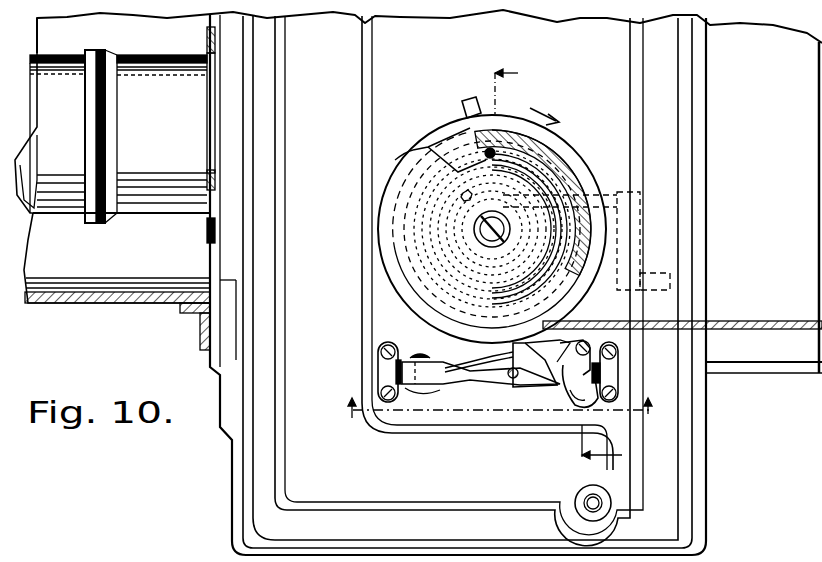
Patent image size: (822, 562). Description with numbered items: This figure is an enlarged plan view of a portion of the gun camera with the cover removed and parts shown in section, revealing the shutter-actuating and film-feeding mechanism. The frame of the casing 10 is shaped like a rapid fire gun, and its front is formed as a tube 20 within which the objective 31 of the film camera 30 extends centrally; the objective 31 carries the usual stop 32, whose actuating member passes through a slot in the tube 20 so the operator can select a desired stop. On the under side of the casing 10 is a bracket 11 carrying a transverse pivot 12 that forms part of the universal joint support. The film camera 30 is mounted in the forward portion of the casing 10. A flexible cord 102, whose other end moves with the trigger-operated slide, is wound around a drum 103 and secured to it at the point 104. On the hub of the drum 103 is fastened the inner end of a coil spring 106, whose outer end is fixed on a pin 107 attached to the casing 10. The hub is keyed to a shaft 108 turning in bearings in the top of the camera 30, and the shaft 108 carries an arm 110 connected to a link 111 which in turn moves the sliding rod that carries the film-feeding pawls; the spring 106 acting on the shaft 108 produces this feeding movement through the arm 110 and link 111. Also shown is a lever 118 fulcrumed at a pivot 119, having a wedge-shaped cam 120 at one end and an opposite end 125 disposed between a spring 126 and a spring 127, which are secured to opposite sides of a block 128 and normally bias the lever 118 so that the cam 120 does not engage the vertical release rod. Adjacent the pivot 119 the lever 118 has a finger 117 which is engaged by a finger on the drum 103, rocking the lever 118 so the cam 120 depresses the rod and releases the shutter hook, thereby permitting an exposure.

The casing 10 is at (790, 353).
The bracket 11 is at (570, 264).
The transverse pivot 12 is at (367, 427).
The tube 20 is at (115, 188).
The film camera 30 is at (285, 470).
The objective 31 is at (155, 56).
The stop 32 is at (96, 55).
The cord 102 is at (735, 330).
The drum 103 is at (562, 140).
The point 104 is at (398, 234).
The coil spring 106 is at (548, 188).
The pin 107 is at (440, 145).
The shaft 108 is at (482, 247).
The arm 110 is at (485, 106).
The link 111 is at (617, 192).
The finger 117 is at (563, 360).
The lever 118 is at (545, 386).
The pivot 119 is at (508, 378).
The wedge-shaped cam 120 is at (582, 398).
The end of lever 125 is at (466, 382).
The spring 126 is at (478, 366).
The spring 127 is at (432, 386).
The block 128 is at (380, 374).